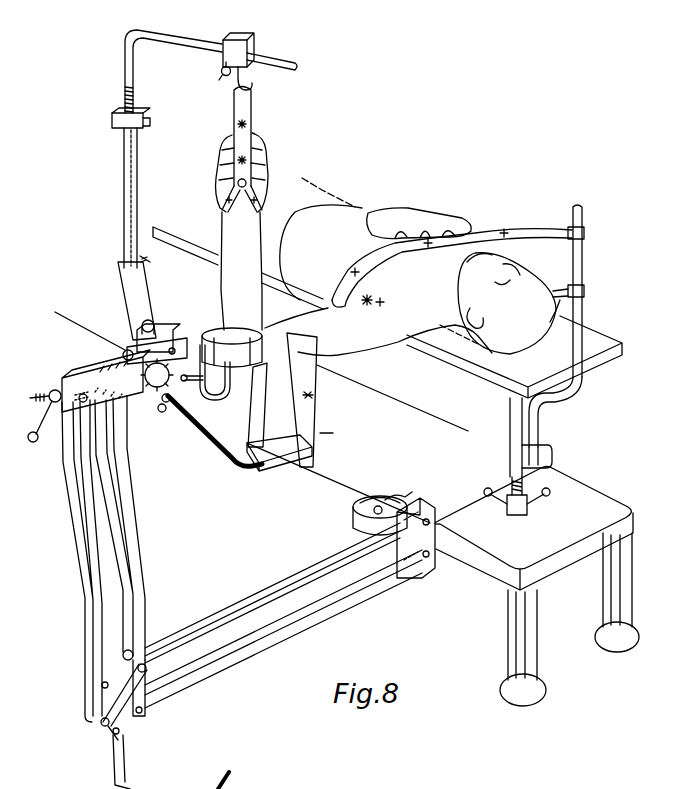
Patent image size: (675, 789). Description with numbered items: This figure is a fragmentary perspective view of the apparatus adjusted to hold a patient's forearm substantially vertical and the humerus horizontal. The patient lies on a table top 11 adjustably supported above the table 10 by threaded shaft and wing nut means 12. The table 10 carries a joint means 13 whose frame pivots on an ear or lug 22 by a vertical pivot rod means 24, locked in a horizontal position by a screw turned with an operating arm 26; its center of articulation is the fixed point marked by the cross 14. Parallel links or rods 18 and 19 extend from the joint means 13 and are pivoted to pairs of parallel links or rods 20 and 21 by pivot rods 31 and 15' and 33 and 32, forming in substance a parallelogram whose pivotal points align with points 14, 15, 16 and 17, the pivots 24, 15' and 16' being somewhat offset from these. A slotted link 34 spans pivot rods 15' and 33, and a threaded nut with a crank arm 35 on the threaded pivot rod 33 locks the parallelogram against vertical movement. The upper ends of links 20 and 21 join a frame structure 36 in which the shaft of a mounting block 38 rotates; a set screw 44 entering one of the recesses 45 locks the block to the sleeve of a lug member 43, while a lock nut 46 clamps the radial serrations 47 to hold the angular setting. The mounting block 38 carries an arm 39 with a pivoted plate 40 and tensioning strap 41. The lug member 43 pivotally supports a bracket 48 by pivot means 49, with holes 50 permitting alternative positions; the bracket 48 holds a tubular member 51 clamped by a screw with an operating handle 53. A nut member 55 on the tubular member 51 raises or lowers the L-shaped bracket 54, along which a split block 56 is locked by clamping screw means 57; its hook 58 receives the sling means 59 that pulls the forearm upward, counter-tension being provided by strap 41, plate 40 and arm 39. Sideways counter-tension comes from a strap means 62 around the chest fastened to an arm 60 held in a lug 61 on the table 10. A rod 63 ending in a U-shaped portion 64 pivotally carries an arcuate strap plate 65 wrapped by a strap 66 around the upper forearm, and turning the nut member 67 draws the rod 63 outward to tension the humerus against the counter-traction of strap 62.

The table 10 is at (566, 578).
The table top 11 is at (624, 351).
The threaded shaft and wing nut means 12 is at (490, 491).
The joint means 13 is at (341, 535).
The cross 14 is at (362, 510).
The pivotal point 15 is at (149, 637).
The pivot rod 15' is at (141, 691).
The pivotal point 16 is at (103, 358).
The pivot 16' is at (125, 404).
The pivotal point 17 is at (374, 306).
The link or rod 18 is at (237, 602).
The link or rod 19 is at (262, 647).
The pair of parallel links or rods 20 is at (84, 605).
The pair of parallel links or rods 21 is at (128, 583).
The ear or lug 22 is at (354, 537).
The vertical pivot rod means 24 is at (378, 505).
The operating arm 26 is at (398, 490).
The pivot rod 31 is at (100, 688).
The pivot rod 32 is at (147, 711).
The threaded pivot rod 33 is at (110, 735).
The slotted link 34 is at (100, 719).
The crank arm (crank-nut) 35 is at (124, 763).
The frame structure 36 is at (70, 376).
The mounting block 38 is at (169, 400).
The arm 39 is at (238, 464).
The plate 40 is at (272, 462).
The tensioning strap 41 is at (316, 404).
The lug member 43 is at (166, 346).
The set screw 44 is at (162, 412).
The recesses 45 is at (130, 357).
The lock nut 46 is at (60, 391).
The radial serrations 47 is at (146, 380).
The bracket 48 is at (147, 287).
The pivot means 49 is at (141, 331).
The holes 50 is at (174, 349).
The tubular member 51 is at (138, 192).
The operating handle 53 is at (151, 259).
The L-shaped bracket 54 is at (172, 42).
The nut member 55 is at (151, 122).
The split block 56 is at (254, 46).
The clamping screw means 57 is at (222, 72).
The hook 58 is at (252, 86).
The sling means 59 is at (251, 135).
The arm 60 is at (583, 271).
The lug 61 is at (553, 449).
The strap means 62 is at (528, 232).
The rod 63 is at (188, 376).
The U-shaped portion 64 is at (224, 390).
The arcuate strap plate 65 is at (236, 338).
The strap 66 is at (259, 352).
The nut member 67 is at (42, 402).